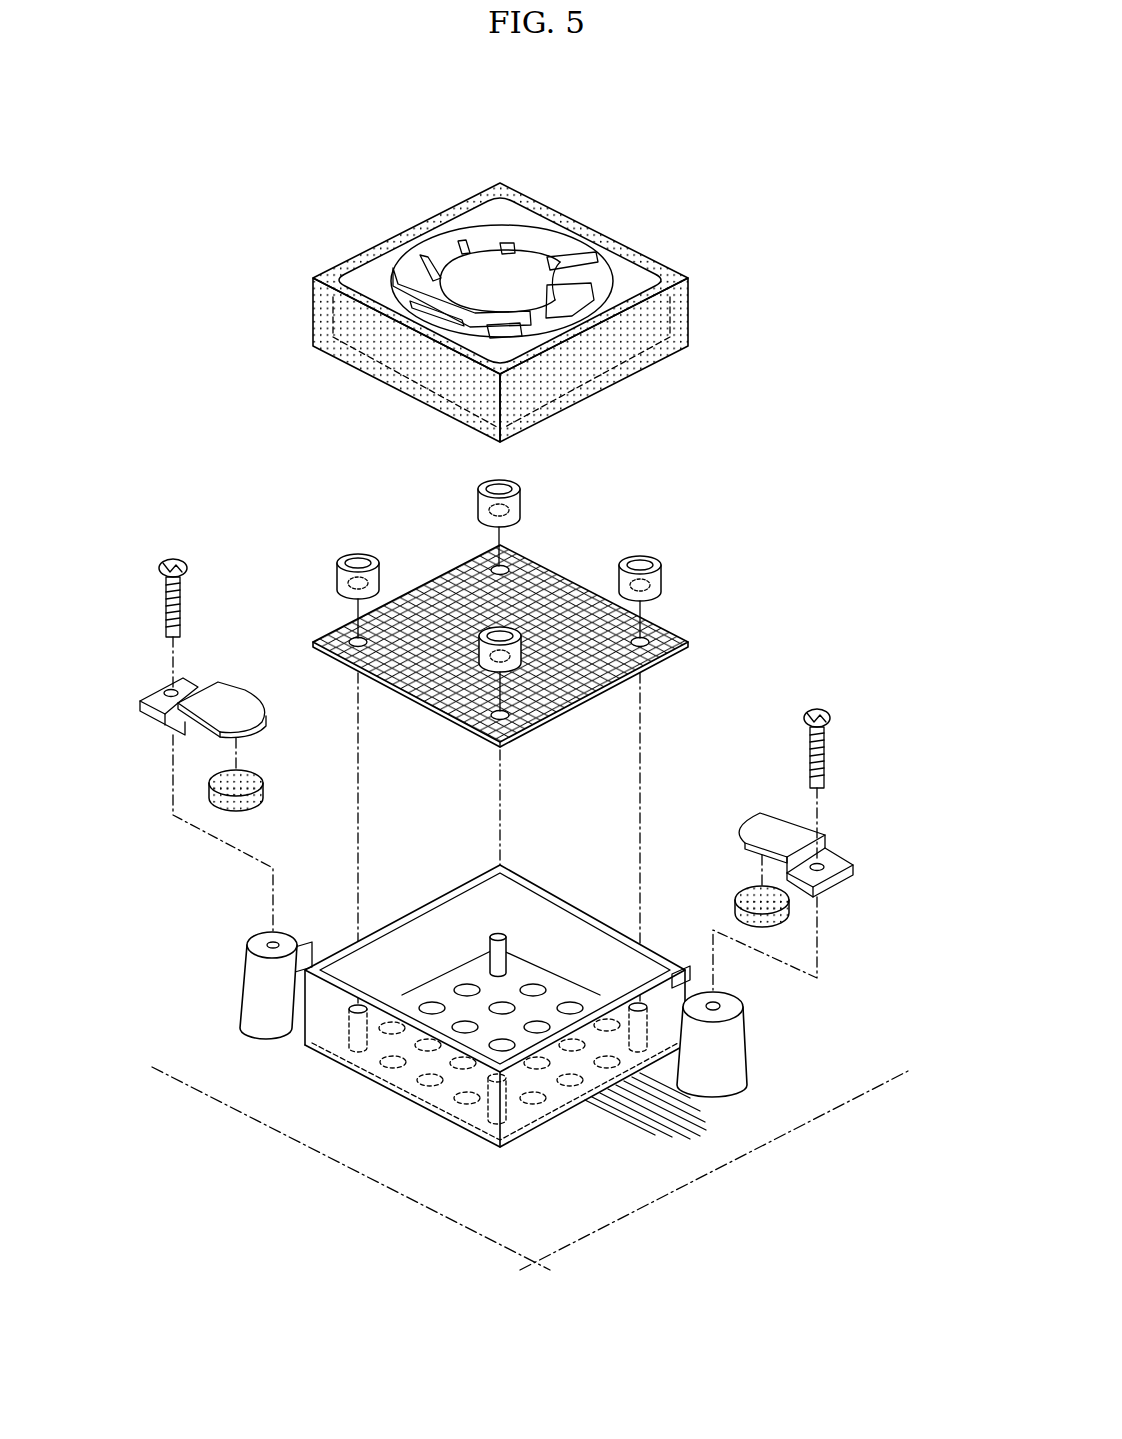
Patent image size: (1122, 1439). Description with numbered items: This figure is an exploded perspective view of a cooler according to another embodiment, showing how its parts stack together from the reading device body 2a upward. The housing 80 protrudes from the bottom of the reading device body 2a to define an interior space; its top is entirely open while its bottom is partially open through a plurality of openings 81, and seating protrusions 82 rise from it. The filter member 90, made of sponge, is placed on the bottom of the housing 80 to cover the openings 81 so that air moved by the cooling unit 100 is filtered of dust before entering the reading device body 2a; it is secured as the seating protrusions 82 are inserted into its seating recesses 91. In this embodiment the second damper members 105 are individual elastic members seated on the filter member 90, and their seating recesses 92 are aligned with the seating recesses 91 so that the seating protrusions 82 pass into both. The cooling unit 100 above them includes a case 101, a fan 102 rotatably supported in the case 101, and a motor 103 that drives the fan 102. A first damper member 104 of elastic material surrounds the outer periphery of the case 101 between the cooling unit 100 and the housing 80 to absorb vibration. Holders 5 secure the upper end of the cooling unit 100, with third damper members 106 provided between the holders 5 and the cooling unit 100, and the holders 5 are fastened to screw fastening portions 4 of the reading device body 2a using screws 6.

The cooling unit 100 is at (690, 170).
The case 101 is at (620, 263).
The fan 102 is at (577, 270).
The motor 103 is at (520, 270).
The first damper member 104 is at (688, 325).
The filter member 90 is at (548, 573).
The seating recesses 91 is at (645, 638).
The seating recesses 92 is at (645, 598).
The second damper members 105 is at (662, 572).
The housing 80 is at (533, 883).
The openings 81 is at (537, 987).
The seating protrusions 82 is at (497, 935).
The screw fastening portions 4 is at (735, 1037).
The holders 5 is at (768, 817).
The screws 6 is at (830, 733).
The third damper members 106 is at (743, 887).
The reading device body 2a is at (735, 1128).